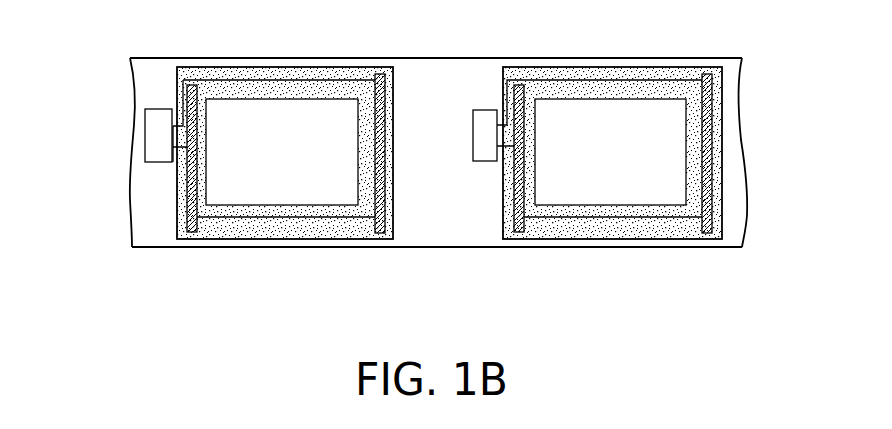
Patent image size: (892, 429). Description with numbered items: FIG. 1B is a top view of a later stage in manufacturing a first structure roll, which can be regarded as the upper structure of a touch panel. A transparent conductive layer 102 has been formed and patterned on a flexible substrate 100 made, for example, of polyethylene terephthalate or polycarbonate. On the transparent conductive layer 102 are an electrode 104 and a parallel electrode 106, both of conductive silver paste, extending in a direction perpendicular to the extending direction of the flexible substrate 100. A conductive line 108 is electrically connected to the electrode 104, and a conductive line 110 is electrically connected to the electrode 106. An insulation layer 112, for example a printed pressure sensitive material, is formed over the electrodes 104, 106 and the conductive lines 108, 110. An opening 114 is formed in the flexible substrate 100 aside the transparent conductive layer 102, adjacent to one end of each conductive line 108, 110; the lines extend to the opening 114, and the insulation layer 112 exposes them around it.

The flexible substrate 100 is at (728, 232).
The transparent conductive layer 102 is at (280, 125).
The electrode 104 is at (191, 233).
The electrode 106 is at (379, 234).
The conductive line 108 is at (171, 150).
The conductive line 110 is at (171, 122).
The insulation layer 112 is at (277, 212).
The opening 114 is at (155, 143).